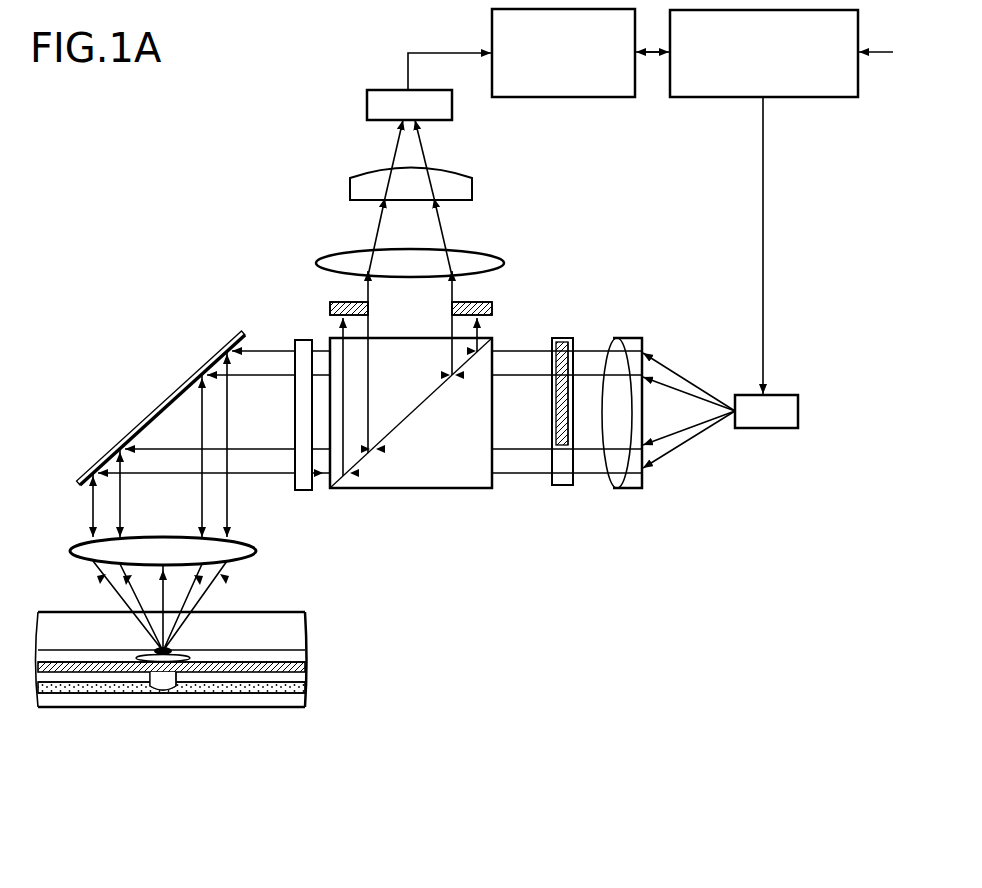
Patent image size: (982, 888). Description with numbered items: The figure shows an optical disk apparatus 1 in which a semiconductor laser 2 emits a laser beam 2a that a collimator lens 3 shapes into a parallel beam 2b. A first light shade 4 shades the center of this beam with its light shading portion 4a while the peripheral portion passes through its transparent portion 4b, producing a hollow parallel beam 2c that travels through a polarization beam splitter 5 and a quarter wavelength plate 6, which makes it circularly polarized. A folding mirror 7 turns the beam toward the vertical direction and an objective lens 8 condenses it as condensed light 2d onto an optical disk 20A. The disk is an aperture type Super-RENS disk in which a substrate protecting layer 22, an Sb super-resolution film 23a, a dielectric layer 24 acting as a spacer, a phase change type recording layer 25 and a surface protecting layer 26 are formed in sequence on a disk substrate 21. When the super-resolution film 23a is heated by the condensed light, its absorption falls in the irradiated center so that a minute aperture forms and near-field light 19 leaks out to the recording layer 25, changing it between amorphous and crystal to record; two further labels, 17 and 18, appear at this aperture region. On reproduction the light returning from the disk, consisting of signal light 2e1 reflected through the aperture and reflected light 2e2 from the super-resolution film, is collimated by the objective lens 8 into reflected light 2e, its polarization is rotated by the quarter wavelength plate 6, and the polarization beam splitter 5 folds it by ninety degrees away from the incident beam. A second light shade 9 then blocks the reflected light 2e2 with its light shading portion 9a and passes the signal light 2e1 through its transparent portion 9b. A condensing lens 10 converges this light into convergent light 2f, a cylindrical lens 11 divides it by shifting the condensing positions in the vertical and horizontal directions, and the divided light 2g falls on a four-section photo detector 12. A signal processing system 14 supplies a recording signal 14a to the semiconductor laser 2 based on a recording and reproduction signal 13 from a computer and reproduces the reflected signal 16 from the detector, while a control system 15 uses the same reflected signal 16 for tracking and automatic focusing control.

The optical disk apparatus 1 is at (243, 212).
The semiconductor laser 2 is at (770, 428).
The laser beam 2a is at (697, 440).
The parallel beam 2b is at (593, 447).
The hollow parallel beam 2c is at (514, 478).
The condensed light 2d is at (118, 590).
The reflected light 2e is at (92, 512).
The signal light 2e1 is at (452, 292).
The reflected light 2e2 is at (340, 333).
The convergent light 2f is at (373, 229).
The divided light 2g is at (392, 150).
The collimator lens 3 is at (631, 338).
The first light shade 4 is at (562, 340).
The light shading portion 4a is at (571, 440).
The transparent portion 4b is at (567, 358).
The polarization beam splitter 5 is at (420, 490).
The quarter wavelength plate 6 is at (302, 490).
The folding mirror 7 is at (168, 402).
The objective lens 8 is at (72, 556).
The second light shade 9 is at (330, 305).
The light shading portion 9a is at (330, 311).
The transparent portion 9b is at (362, 301).
The condensing lens 10 is at (490, 265).
The cylindrical lens 11 is at (472, 190).
The four-section photo detector 12 is at (445, 105).
The recording and reproduction signal 13 is at (877, 53).
The signal processing system 14 is at (706, 97).
The recording signal 14a is at (763, 243).
The control system 15 is at (576, 97).
The reflected signal 16 is at (407, 70).
The pit side wall 17 is at (174, 669).
The pit side wall 18 is at (152, 669).
The near-field light 19 is at (164, 690).
The optical disk 20A is at (240, 672).
The disk substrate 21 is at (297, 630).
The substrate protecting layer 22 is at (303, 652).
The Sb super-resolution film 23a is at (306, 667).
The dielectric layer 24 is at (36, 678).
The phase change type recording layer 25 is at (305, 687).
The surface protecting layer 26 is at (306, 700).